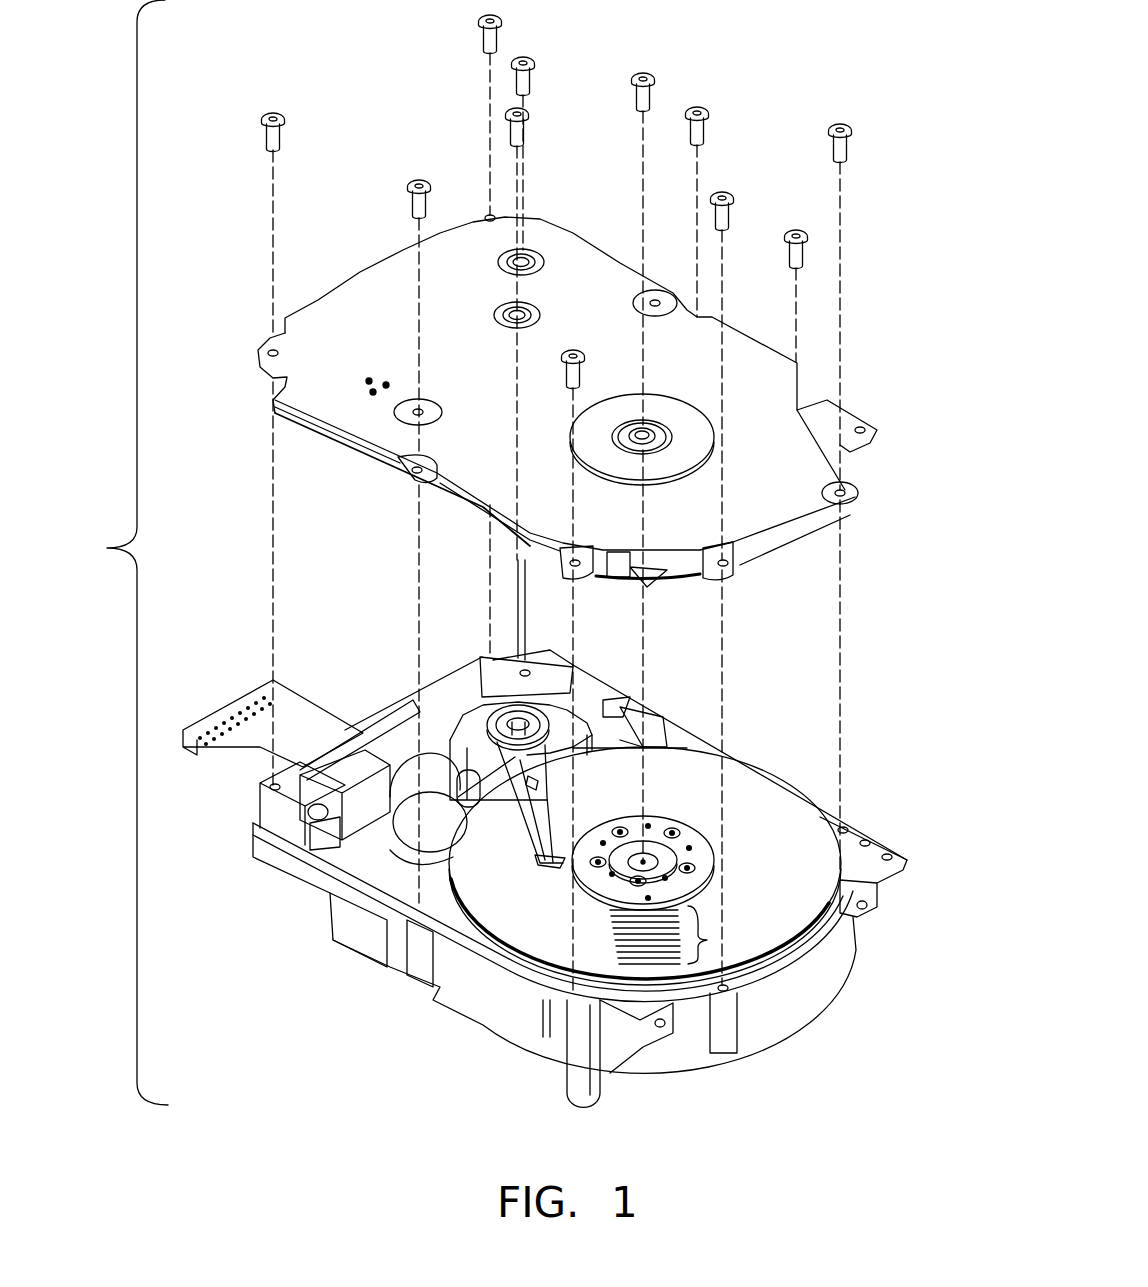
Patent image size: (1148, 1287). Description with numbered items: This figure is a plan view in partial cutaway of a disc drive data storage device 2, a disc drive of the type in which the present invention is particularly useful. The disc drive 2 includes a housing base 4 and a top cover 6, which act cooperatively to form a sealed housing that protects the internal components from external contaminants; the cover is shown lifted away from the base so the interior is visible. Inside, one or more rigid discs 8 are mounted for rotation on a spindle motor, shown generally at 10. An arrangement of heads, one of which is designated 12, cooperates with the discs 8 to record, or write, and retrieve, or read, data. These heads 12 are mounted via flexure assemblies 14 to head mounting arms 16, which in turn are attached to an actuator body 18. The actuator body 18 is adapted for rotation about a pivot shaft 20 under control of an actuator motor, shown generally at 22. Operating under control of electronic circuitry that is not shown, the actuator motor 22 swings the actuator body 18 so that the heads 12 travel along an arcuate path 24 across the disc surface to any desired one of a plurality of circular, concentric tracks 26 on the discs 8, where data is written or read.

The disc drive data storage device 2 is at (115, 552).
The housing base 4 is at (255, 855).
The top cover 6 is at (866, 421).
The rigid discs 8 is at (813, 838).
The spindle motor 10 is at (660, 818).
The heads 12 is at (560, 845).
The flexure assemblies 14 is at (533, 840).
The head mounting arms 16 is at (533, 780).
The actuator body 18 is at (397, 817).
The pivot shaft 20 is at (517, 707).
The actuator motor 22 is at (592, 693).
The arcuate path 24 is at (447, 863).
The tracks 26 is at (700, 936).